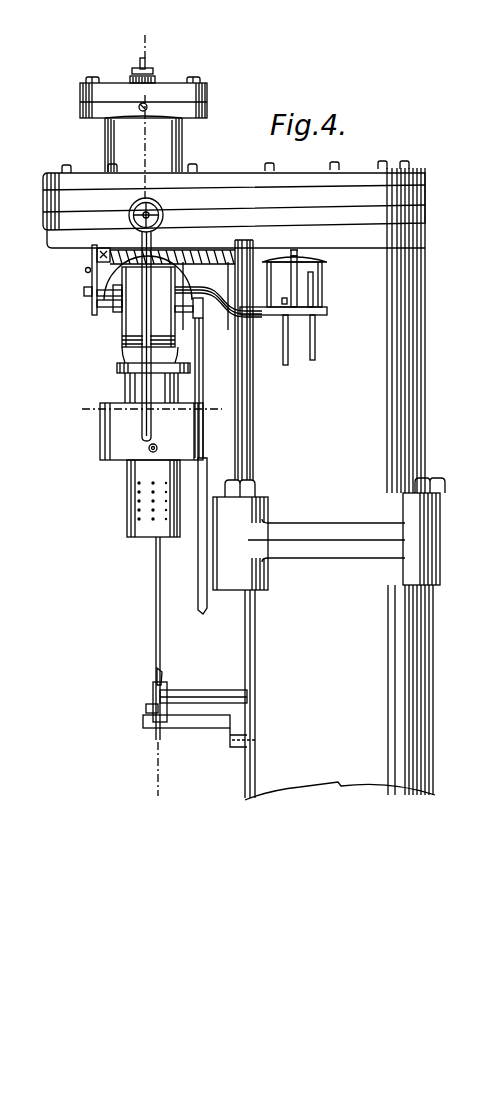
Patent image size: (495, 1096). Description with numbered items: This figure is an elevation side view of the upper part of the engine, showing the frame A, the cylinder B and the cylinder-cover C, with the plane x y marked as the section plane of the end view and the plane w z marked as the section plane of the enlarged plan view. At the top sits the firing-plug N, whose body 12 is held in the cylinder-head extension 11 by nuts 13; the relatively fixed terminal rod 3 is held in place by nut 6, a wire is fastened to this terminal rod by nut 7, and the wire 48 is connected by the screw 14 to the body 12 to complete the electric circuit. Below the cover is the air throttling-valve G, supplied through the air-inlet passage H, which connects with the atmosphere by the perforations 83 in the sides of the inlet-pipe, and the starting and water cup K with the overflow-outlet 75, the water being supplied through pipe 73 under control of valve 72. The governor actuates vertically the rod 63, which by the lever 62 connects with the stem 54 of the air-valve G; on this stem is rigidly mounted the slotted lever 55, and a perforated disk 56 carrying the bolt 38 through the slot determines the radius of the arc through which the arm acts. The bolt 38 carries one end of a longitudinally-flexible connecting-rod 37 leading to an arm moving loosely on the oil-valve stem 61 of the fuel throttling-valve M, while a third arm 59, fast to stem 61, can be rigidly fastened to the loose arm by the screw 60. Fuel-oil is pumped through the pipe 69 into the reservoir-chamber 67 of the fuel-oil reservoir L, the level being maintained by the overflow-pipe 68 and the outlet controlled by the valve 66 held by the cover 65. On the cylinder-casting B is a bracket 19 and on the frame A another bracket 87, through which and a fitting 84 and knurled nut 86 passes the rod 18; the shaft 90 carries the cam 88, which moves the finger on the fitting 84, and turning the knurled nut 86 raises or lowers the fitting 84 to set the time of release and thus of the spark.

The fixed terminal rod 3 is at (138, 62).
The nut 6 is at (130, 78).
The nut 7 is at (150, 69).
The cylinder-head extension 11 is at (154, 144).
The body 12 is at (143, 100).
The nuts 13 is at (147, 72).
The screw 14 is at (139, 108).
The rod 18 is at (148, 638).
The bracket 19 is at (158, 76).
The longitudinally-flexible connecting-rod 37 is at (92, 256).
The bolt 38 is at (112, 245).
The wire 48 is at (148, 108).
The stem 54 is at (120, 309).
The lever 55 is at (93, 308).
The perforated disk 56 is at (90, 262).
The third arm 59 is at (84, 292).
The screw 60 is at (86, 286).
The oil-valve stem 61 is at (202, 290).
The lever 62 is at (204, 309).
The rod 63 is at (196, 536).
The cover 65 is at (323, 262).
The valve 66 is at (296, 253).
The reservoir-chamber 67 is at (314, 278).
The overflow-pipe 68 is at (315, 330).
The pipe 69 is at (284, 330).
The valve 72 is at (162, 211).
The pipe 73 is at (143, 380).
The overflow-outlet 75 is at (149, 448).
The perforations 83 is at (153, 521).
The fitting 84 is at (153, 693).
The knurled nut 86 is at (146, 708).
The bracket 87 is at (201, 729).
The cam 88 is at (161, 670).
The shaft 90 is at (208, 695).
The frame A is at (329, 639).
The cylinder B is at (304, 330).
The cylinder-cover C is at (250, 177).
The air throttling-valve G is at (148, 329).
The air-inlet passage H is at (140, 498).
The starting and water cup K is at (151, 431).
The fuel-oil reservoir L is at (294, 284).
The fuel throttling-valve M is at (113, 306).
The firing-plug N is at (80, 96).
The section plane w z w is at (145, 408).
The section plane x y x is at (141, 109).
The section plane x y is at (157, 780).
The section plane w z is at (225, 405).